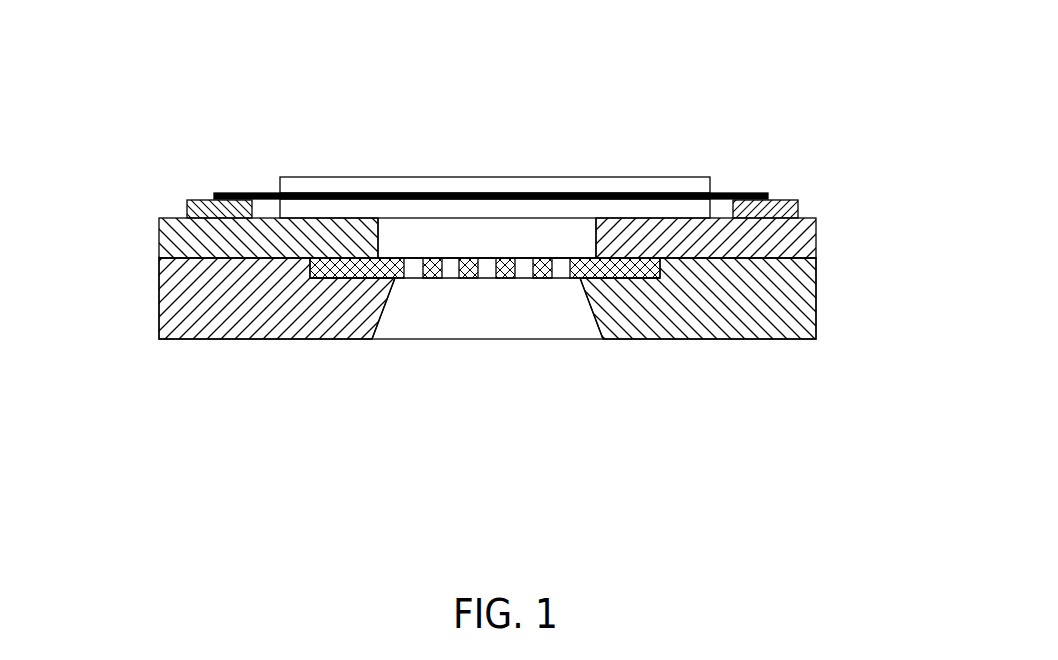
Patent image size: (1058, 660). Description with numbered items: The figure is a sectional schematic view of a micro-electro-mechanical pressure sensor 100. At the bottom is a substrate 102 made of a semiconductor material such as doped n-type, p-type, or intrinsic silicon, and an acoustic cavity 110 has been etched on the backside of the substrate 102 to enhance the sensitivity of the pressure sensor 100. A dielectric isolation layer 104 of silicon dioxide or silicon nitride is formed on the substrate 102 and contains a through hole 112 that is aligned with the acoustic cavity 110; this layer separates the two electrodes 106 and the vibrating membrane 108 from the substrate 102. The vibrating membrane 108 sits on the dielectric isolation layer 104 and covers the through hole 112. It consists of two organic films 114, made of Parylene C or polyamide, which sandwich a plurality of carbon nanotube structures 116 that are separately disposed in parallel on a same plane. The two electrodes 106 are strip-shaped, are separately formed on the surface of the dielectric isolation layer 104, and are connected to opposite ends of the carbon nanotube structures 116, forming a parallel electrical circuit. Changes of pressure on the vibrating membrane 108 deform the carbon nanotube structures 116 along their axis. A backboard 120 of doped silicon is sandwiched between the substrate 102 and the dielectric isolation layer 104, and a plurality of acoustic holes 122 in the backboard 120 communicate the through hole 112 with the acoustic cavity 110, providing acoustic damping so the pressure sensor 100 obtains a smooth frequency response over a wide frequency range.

The pressure sensor 100 is at (493, 63).
The substrate 102 is at (775, 297).
The dielectric isolation layer 104 is at (788, 242).
The electrodes 106 is at (208, 201).
The vibrating membrane 108 is at (155, 92).
The acoustic cavity 110 is at (530, 298).
The through hole 112 is at (460, 242).
The organic films 114 is at (415, 177).
The carbon nanotube structures 116 is at (263, 193).
The backboard 120 is at (363, 278).
The acoustic holes 122 is at (491, 268).